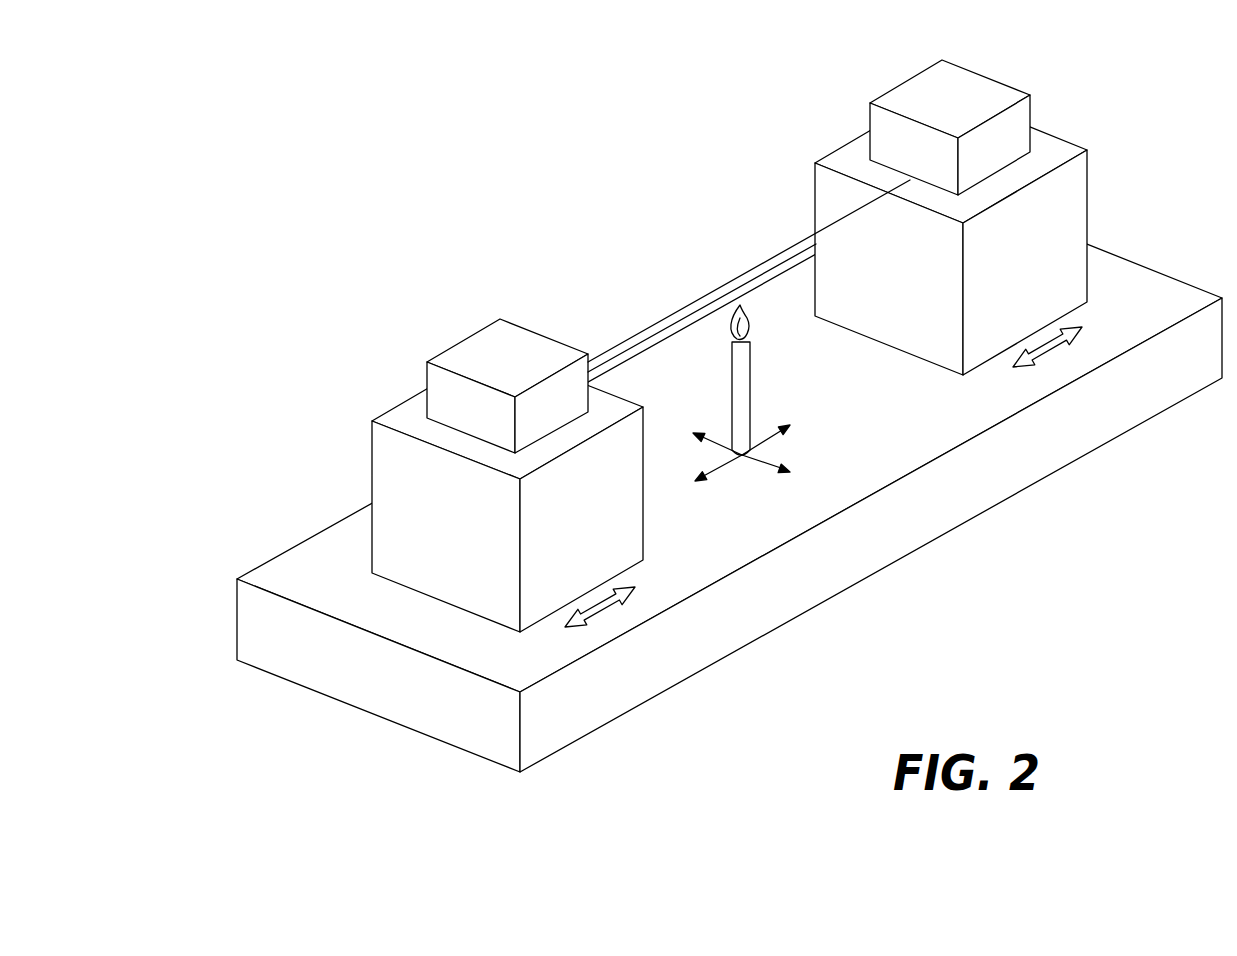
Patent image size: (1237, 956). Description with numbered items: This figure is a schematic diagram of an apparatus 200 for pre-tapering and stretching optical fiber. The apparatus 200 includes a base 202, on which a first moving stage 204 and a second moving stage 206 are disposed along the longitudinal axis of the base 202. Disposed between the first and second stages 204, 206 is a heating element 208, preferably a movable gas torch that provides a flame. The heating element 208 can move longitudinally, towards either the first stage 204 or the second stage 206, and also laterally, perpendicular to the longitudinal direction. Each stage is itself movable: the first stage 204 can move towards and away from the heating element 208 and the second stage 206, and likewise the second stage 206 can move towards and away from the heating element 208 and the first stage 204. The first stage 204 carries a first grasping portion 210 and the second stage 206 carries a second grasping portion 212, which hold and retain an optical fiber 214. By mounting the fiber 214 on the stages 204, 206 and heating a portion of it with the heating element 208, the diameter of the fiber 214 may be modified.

The apparatus 200 is at (747, 762).
The base 202 is at (738, 630).
The first moving stage 204 is at (433, 597).
The second moving stage 206 is at (908, 330).
The heating element 208 is at (750, 379).
The first grasping portion 210 is at (596, 326).
The second grasping portion 212 is at (790, 196).
The optical fiber 214 is at (688, 312).